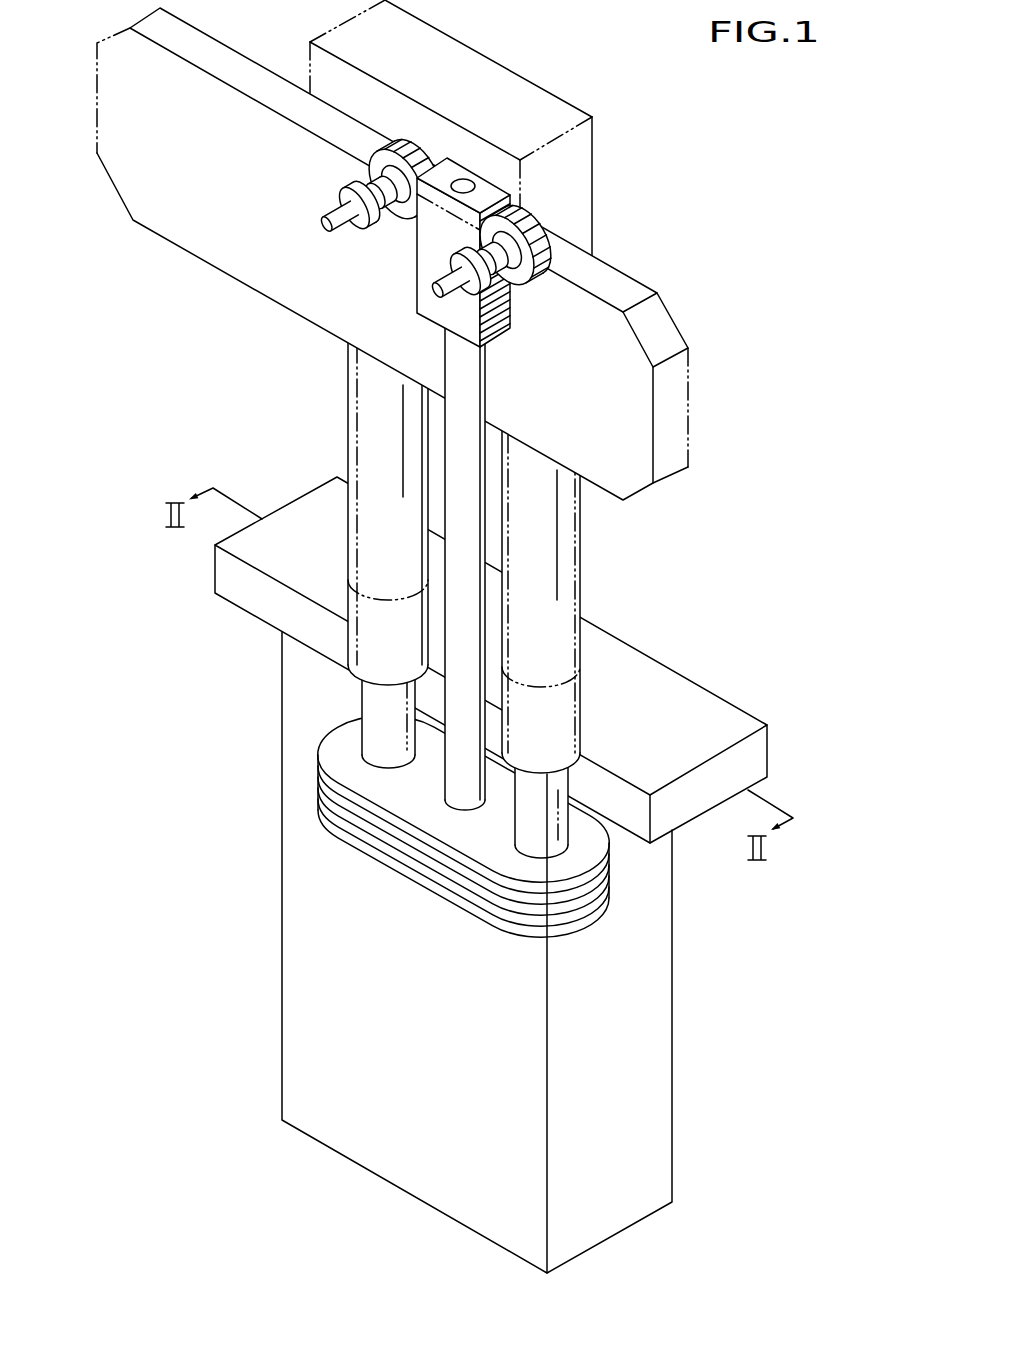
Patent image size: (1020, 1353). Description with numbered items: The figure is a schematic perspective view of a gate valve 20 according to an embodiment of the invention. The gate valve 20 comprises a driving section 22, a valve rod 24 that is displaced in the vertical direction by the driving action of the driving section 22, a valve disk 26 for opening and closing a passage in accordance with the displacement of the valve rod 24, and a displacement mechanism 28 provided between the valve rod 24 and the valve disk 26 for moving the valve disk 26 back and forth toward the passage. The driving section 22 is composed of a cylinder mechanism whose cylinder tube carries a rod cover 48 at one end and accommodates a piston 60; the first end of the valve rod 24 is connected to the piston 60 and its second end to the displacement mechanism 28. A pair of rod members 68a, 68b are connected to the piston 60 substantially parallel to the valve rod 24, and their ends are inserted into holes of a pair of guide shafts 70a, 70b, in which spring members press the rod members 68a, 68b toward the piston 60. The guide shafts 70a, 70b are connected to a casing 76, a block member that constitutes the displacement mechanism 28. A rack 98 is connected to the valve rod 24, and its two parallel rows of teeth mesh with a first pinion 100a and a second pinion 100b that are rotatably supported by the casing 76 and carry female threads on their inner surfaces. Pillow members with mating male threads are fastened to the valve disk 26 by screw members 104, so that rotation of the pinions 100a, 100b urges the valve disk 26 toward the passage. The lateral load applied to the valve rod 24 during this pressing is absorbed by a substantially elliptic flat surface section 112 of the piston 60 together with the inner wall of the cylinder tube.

The gate valve 20 is at (697, 50).
The driving section 22 is at (680, 1016).
The valve rod 24 is at (470, 540).
The valve disk 26 is at (668, 342).
The displacement mechanism 28 is at (560, 195).
The rod cover 48 is at (684, 692).
The piston 60 is at (490, 862).
The rod member 68a is at (552, 808).
The rod member 68b is at (372, 705).
The guide shaft 70a is at (552, 592).
The guide shaft 70b is at (365, 425).
The casing 76 is at (519, 75).
The rack 98 is at (509, 322).
The first pinion 100a is at (555, 248).
The second pinion 100b is at (398, 142).
The screw member 104 is at (336, 212).
The flat surface section 112 is at (418, 862).